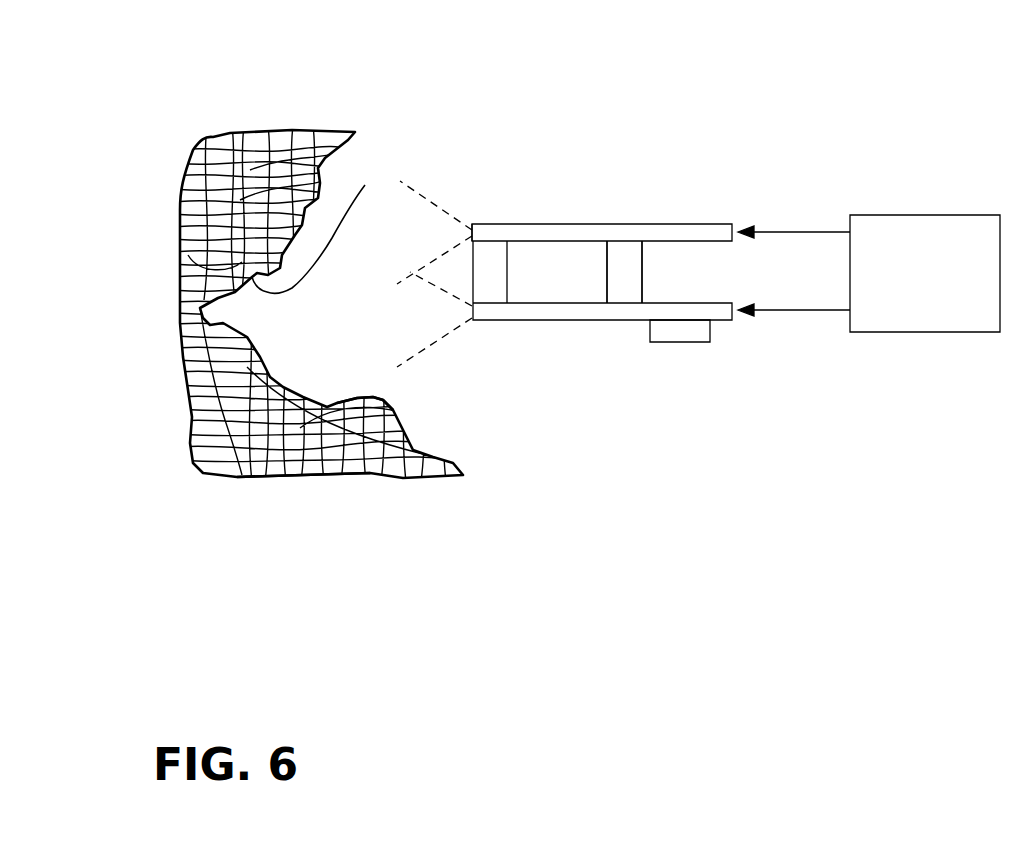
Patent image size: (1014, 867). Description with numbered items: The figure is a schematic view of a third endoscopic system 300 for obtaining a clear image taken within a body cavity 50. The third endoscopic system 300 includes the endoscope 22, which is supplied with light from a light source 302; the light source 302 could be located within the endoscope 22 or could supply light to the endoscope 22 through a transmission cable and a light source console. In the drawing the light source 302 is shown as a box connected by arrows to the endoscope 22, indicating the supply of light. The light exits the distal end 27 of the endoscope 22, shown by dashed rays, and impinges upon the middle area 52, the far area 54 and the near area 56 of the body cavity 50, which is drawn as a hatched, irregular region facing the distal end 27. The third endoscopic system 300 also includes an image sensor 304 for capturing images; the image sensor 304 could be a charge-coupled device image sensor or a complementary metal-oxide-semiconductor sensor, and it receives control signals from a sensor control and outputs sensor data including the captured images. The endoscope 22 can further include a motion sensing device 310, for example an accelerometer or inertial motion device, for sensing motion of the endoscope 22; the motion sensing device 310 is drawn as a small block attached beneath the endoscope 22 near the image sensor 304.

The body cavity 50 is at (253, 137).
The middle area 52 is at (365, 185).
The far area 54 is at (288, 433).
The near area 56 is at (383, 400).
The endoscope 22 is at (617, 223).
The distal end 27 is at (484, 223).
The third endoscopic system 300 is at (699, 166).
The light source 302 is at (893, 214).
The image sensor 304 is at (627, 291).
The motion sensing device 310 is at (698, 333).